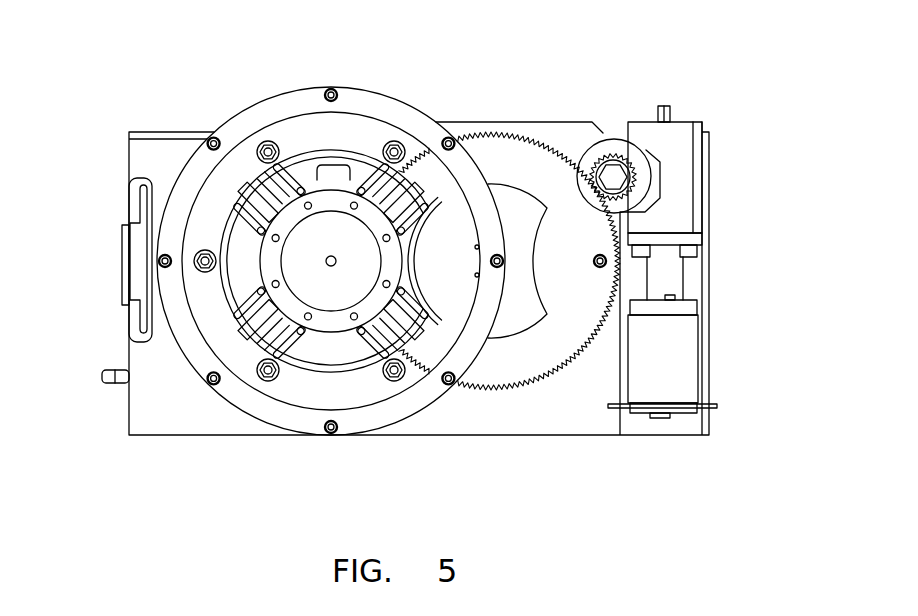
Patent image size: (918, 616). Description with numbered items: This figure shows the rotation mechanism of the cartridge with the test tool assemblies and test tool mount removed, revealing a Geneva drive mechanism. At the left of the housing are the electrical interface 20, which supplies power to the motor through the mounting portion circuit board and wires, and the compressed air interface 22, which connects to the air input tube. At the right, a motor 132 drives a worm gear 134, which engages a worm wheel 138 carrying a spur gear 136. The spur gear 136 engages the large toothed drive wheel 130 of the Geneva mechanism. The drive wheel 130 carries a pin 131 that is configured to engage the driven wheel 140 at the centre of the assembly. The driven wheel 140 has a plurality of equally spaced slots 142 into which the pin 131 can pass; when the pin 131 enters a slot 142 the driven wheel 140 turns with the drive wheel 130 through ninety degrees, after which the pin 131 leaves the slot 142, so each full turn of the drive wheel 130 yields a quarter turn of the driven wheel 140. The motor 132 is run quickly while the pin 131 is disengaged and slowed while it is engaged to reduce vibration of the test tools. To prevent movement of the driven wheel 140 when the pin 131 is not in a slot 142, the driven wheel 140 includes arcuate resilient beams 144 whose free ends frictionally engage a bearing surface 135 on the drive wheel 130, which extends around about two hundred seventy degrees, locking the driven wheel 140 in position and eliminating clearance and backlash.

The electrical interface 20 is at (126, 263).
The compressed air interface 22 is at (122, 387).
The drive wheel 130 is at (556, 340).
The pin 131 is at (620, 277).
The motor 132 is at (680, 366).
The worm gear 134 is at (687, 212).
The bearing surface 135 is at (513, 325).
The spur gear 136 is at (641, 158).
The worm wheel 138 is at (615, 152).
The driven wheel 140 is at (331, 293).
The slots 142 is at (256, 198).
The arcuate resilient beams 144 is at (300, 190).